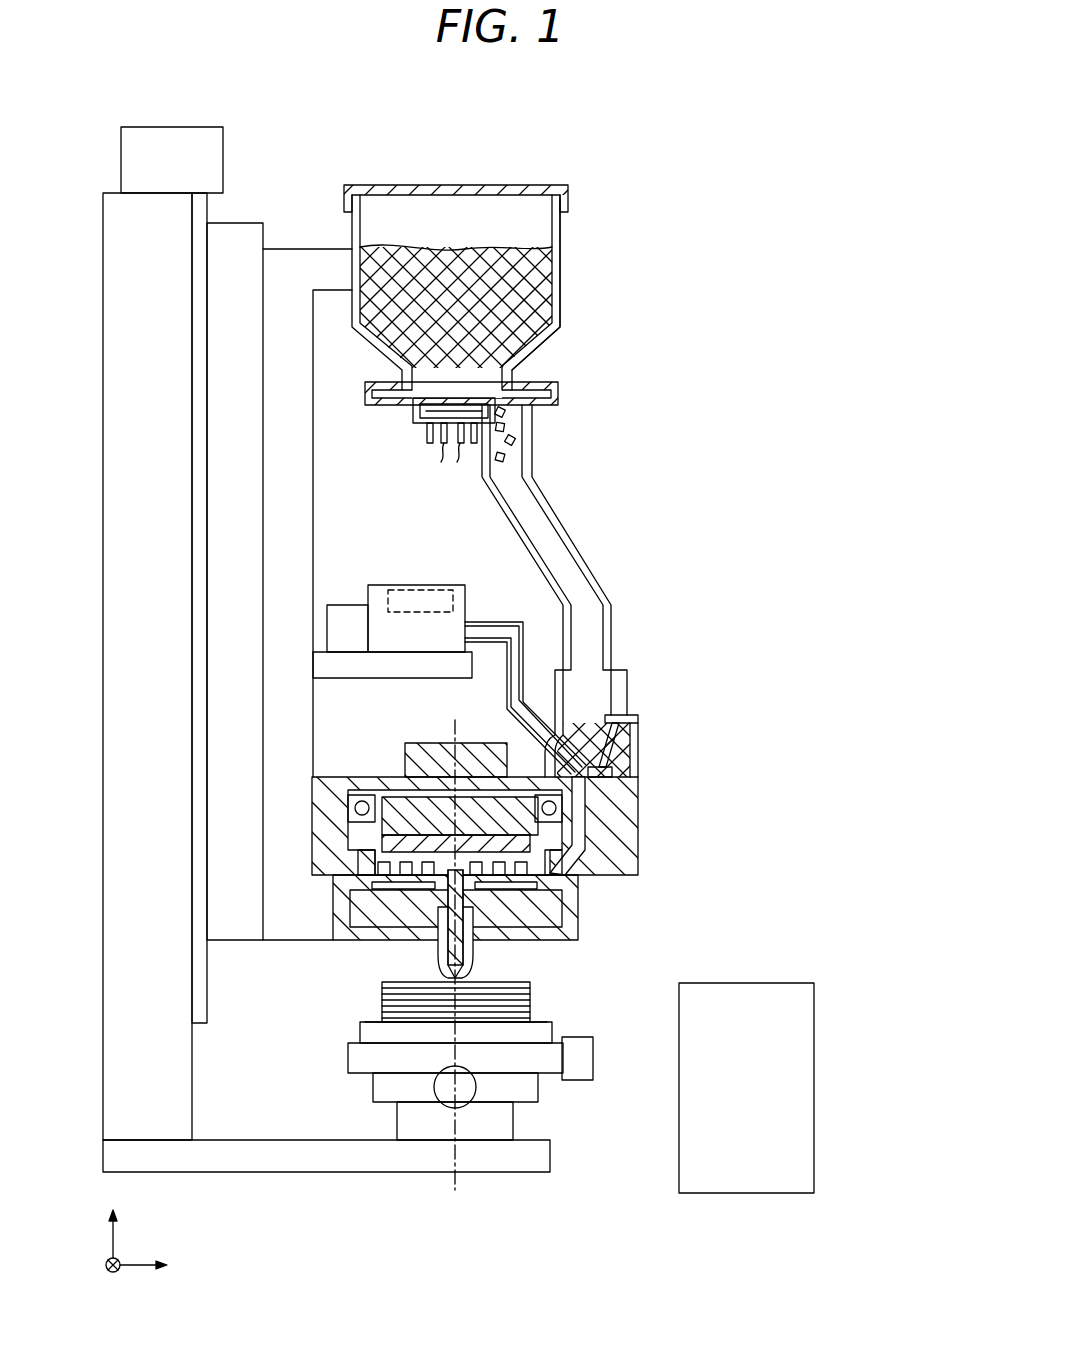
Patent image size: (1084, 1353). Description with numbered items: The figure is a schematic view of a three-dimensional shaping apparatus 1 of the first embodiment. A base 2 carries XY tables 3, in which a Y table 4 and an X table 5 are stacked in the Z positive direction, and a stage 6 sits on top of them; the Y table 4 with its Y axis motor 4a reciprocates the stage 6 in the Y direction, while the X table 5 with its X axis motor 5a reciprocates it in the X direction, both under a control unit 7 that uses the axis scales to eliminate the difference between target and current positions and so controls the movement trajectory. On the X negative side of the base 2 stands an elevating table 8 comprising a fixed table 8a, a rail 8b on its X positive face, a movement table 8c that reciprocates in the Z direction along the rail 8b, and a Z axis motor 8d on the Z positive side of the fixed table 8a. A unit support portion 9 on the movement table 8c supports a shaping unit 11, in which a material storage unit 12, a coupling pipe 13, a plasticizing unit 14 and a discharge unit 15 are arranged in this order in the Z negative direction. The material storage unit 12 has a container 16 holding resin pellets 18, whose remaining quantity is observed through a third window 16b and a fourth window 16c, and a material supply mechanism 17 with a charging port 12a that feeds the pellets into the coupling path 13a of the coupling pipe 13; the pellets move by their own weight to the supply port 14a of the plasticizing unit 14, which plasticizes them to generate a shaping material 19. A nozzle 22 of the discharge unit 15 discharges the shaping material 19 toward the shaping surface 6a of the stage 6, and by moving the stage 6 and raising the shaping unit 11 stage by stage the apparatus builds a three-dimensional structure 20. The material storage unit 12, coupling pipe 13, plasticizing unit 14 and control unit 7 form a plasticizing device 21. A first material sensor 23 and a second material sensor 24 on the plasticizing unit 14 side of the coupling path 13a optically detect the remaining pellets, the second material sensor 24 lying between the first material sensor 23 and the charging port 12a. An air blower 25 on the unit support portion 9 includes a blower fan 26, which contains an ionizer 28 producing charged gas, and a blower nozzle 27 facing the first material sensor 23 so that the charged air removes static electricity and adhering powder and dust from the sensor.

The three-dimensional shaping apparatus 1 is at (746, 140).
The base 2 is at (523, 1164).
The XY tables 3 is at (629, 1045).
The Y table 4 is at (531, 1091).
The Y axis motor 4a is at (466, 1088).
The X table 5 is at (548, 1063).
The X axis motor 5a is at (578, 1046).
The stage 6 is at (544, 1034).
The shaping surface 6a is at (539, 1028).
The control unit 7 is at (752, 1191).
The elevating table 8 is at (103, 111).
The fixed table 8a is at (185, 1114).
The rail 8b is at (207, 1014).
The movement table 8c is at (238, 929).
The Z axis motor 8d is at (208, 152).
The unit support portion 9 is at (290, 246).
The shaping unit 11 is at (862, 185).
The material storage unit 12 is at (752, 185).
The charging port 12a is at (521, 408).
The coupling pipe 13 is at (752, 410).
The coupling path 13a is at (567, 551).
The plasticizing unit 14 is at (725, 737).
The supply port 14a is at (581, 799).
The discharge unit 15 is at (662, 896).
The container 16 is at (567, 218).
The third window 16b is at (557, 266).
The fourth window 16c is at (541, 343).
The material supply mechanism 17 is at (561, 389).
The resin pellets 18 is at (526, 313).
The shaping material 19 is at (452, 969).
The three-dimensional structure 20 is at (381, 996).
The plasticizing device 21 is at (812, 185).
The nozzle 22 is at (471, 946).
The first material sensor 23 is at (621, 768).
The second material sensor 24 is at (631, 720).
The air blower 25 is at (405, 518).
The blower fan 26 is at (425, 630).
The blower nozzle 27 is at (540, 738).
The ionizer 28 is at (400, 584).